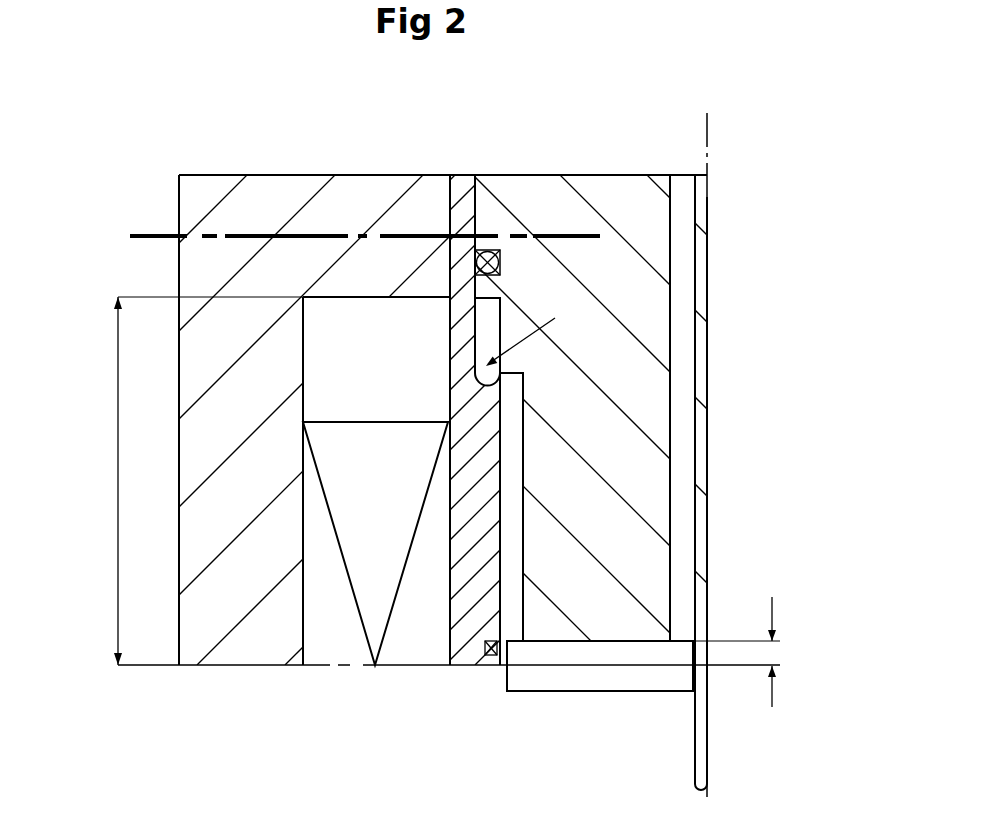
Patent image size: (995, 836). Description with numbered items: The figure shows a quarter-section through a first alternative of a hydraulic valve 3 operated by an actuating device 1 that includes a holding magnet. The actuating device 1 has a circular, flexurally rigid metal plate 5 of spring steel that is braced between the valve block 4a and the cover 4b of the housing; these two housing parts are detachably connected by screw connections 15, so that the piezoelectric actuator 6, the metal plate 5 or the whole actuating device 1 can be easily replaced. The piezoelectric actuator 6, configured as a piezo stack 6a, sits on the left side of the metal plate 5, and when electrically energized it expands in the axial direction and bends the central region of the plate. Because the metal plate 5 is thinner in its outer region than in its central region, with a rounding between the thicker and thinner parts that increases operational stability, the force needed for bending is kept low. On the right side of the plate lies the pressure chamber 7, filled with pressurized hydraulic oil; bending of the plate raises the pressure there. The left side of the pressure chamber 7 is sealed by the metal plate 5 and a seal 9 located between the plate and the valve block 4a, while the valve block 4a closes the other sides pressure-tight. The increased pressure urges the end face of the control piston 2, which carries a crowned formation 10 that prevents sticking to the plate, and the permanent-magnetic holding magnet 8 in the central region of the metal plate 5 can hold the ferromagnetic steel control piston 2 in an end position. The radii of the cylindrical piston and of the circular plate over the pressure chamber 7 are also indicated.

The actuating device 1 is at (279, 150).
The control piston 2 is at (548, 680).
The hydraulic valve 3 is at (641, 140).
The valve block 4a is at (551, 192).
The cover 4b is at (242, 645).
The metal plate 5 is at (467, 627).
The piezoelectric actuator 6 is at (375, 543).
The piezo stack 6a is at (375, 543).
The pressure chamber 7 is at (510, 517).
The holding magnet 8 is at (480, 662).
The seal 9 is at (500, 250).
The crowned formation 10 is at (498, 692).
The screw connections 15 is at (130, 236).